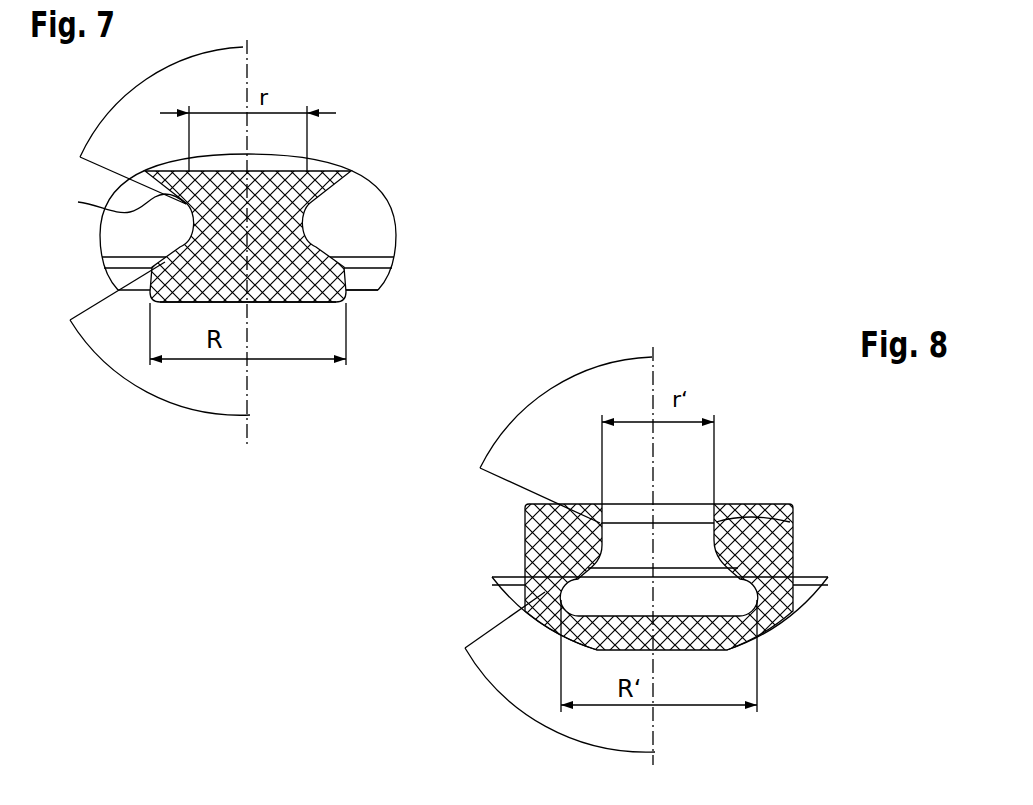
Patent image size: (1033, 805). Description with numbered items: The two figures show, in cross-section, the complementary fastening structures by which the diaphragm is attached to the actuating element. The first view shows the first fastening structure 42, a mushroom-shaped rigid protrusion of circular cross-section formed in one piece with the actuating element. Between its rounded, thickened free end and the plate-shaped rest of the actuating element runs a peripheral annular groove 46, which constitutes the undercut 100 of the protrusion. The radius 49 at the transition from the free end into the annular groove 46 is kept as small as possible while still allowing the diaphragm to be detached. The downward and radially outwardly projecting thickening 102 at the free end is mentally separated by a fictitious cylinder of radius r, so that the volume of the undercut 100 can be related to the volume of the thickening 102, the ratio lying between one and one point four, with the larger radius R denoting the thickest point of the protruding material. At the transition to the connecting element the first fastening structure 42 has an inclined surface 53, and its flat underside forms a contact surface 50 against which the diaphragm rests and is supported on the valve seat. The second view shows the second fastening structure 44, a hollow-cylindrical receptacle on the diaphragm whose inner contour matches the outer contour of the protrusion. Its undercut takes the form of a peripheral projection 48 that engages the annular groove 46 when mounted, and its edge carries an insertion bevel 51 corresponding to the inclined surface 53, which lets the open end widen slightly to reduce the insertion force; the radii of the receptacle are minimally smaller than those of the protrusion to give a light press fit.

In FIG. 7, the first fastening structure 42 is at (448, 117).
In FIG. 7, the annular groove 46 is at (313, 228).
In FIG. 7, the radius 49 is at (350, 252).
In FIG. 7, the contact surface 50 is at (298, 303).
In FIG. 7, the inclined surface 53 is at (115, 205).
In FIG. 7, the undercut 100 is at (102, 237).
In FIG. 7, the thickening 102 is at (380, 292).
In FIG. 8, the second fastening structure 44 is at (470, 533).
In FIG. 8, the projection 48 is at (793, 532).
In FIG. 8, the insertion bevel 51 is at (737, 504).